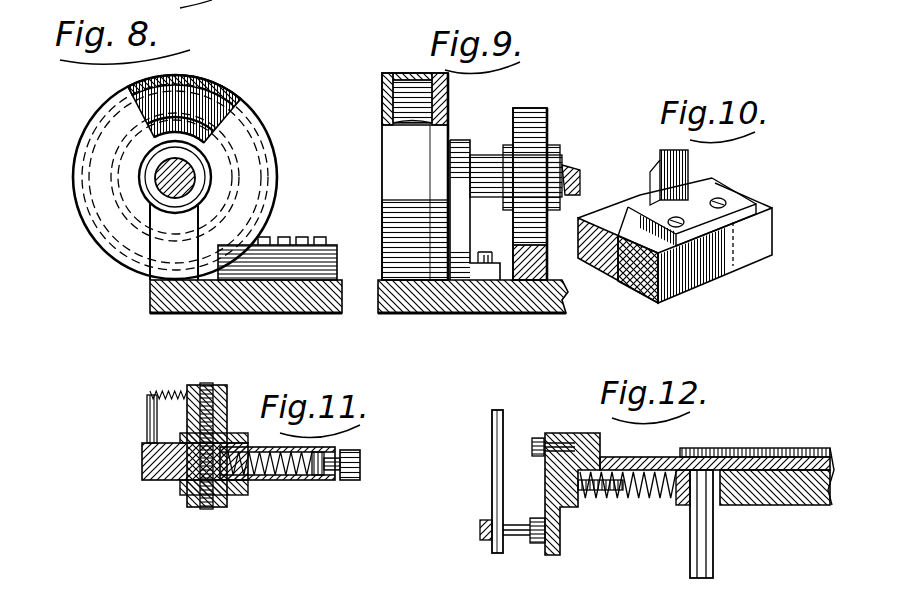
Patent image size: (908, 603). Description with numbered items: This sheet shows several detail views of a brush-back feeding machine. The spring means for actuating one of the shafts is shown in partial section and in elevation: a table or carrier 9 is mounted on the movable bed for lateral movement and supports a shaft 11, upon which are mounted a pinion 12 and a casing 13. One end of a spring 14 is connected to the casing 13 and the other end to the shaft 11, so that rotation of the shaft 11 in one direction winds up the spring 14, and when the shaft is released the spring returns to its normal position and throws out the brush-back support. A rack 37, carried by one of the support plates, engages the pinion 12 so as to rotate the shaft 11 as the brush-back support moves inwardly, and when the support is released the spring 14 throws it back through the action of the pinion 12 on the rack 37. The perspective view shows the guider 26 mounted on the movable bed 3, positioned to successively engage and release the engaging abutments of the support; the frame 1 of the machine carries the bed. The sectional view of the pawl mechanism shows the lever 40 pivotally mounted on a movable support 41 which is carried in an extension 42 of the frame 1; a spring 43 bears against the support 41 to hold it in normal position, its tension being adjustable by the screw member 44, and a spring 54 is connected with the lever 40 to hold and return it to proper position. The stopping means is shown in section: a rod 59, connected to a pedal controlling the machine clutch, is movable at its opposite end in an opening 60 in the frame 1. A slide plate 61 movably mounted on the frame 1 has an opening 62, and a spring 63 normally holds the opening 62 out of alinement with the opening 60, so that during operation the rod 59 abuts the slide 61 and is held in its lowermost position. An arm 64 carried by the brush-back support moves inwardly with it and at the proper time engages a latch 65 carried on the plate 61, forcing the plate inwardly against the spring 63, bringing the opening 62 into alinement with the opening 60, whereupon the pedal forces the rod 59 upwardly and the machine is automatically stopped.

In FIG. 10, the frame 1 is at (598, 213).
In FIG. 10, the movable bed 3 is at (752, 237).
In FIG. 8, the table or carrier 9 is at (158, 298).
In FIG. 9, the table or carrier 9 is at (468, 291).
In FIG. 8, the shaft 11 is at (160, 190).
In FIG. 9, the shaft 11 is at (566, 165).
In FIG. 9, the pinion 12 is at (523, 130).
In FIG. 8, the casing 13 is at (268, 146).
In FIG. 9, the casing 13 is at (415, 176).
In FIG. 8, the spring 14 is at (201, 120).
In FIG. 9, the spring 14 is at (404, 98).
In FIG. 10, the guider 26 is at (672, 152).
In FIG. 8, the rack 37 is at (284, 241).
In FIG. 9, the rack 37 is at (548, 268).
In FIG. 11, the lever 40 is at (222, 402).
In FIG. 11, the movable support 41 is at (176, 482).
In FIG. 11, the extension of the frame 42 is at (264, 484).
In FIG. 11, the spring 43 is at (291, 482).
In FIG. 11, the screw member 44 is at (354, 482).
In FIG. 11, the spring 54 is at (168, 394).
In FIG. 12, the rod 59 is at (713, 566).
In FIG. 12, the opening 60 is at (680, 500).
In FIG. 12, the slide plate 61 is at (806, 450).
In FIG. 12, the opening 62 is at (677, 456).
In FIG. 12, the spring 63 is at (624, 496).
In FIG. 12, the arm 64 is at (492, 450).
In FIG. 12, the latch 65 is at (549, 506).